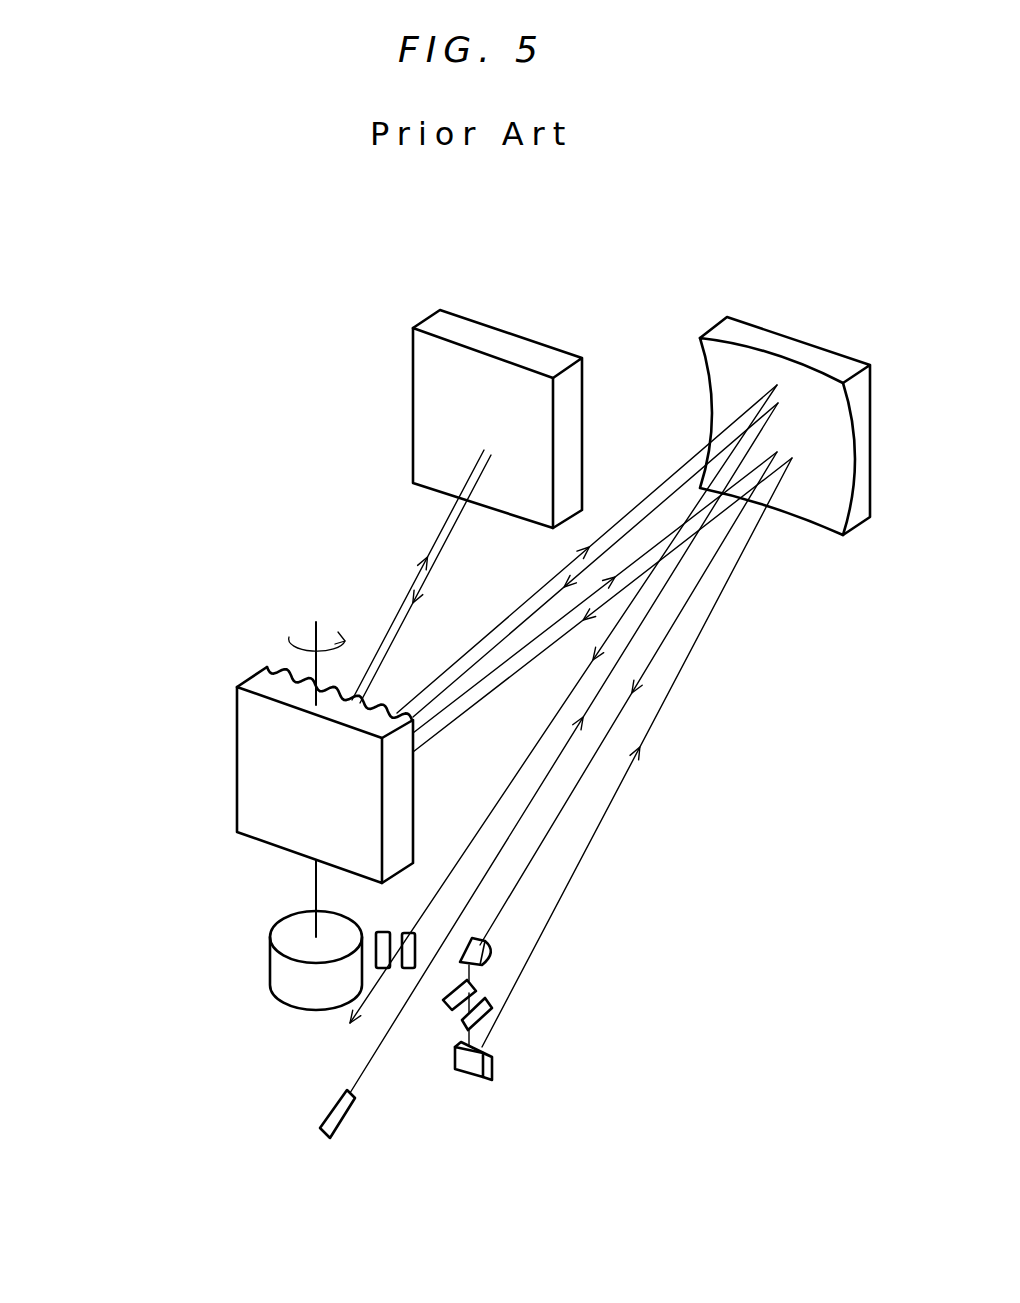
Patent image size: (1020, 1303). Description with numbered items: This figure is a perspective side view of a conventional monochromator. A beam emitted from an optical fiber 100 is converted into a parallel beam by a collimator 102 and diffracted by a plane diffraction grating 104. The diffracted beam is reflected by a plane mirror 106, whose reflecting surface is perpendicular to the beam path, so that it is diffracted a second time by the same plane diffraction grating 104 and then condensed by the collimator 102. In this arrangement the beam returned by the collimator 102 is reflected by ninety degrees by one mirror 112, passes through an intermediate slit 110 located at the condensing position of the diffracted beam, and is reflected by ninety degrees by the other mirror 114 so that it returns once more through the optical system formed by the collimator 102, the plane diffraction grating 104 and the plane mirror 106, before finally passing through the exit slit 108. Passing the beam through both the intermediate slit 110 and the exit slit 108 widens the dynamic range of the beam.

The optical fiber 100 is at (325, 1105).
The collimator 102 is at (793, 350).
The plane diffraction grating 104 is at (253, 775).
The plane mirror 106 is at (507, 345).
The exit slit 108 is at (385, 932).
The intermediate slit 110 is at (495, 1006).
The mirror 112 is at (495, 947).
The mirror 114 is at (494, 1062).